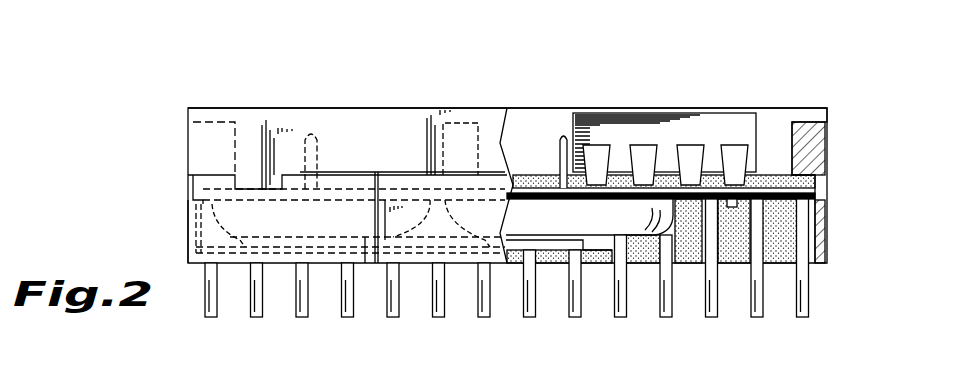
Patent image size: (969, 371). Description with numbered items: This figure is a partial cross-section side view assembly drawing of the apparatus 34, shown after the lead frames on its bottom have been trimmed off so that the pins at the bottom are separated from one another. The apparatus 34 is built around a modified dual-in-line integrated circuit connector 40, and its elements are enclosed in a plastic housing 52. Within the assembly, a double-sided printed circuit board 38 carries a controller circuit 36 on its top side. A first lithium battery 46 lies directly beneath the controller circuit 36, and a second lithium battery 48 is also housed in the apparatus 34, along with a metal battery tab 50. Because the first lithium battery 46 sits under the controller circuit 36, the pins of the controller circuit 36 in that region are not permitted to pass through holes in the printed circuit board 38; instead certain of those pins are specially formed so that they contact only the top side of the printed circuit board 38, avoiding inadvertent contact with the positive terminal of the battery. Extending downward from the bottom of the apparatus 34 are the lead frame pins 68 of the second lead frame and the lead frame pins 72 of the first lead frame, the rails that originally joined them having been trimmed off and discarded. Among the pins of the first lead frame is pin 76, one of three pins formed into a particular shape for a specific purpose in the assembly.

The apparatus 34 is at (495, 355).
The controller circuit 36 is at (705, 125).
The double-sided printed circuit board 38 is at (815, 197).
The modified dual-in-line integrated circuit connector 40 is at (188, 150).
The first lithium battery 46 is at (570, 228).
The second lithium battery 48 is at (339, 228).
The metal battery tab 50 is at (555, 252).
The plastic housing 52 is at (188, 227).
The lead frame pins 68 is at (711, 318).
The lead frame pins 72 is at (211, 318).
The pin 76 is at (438, 318).